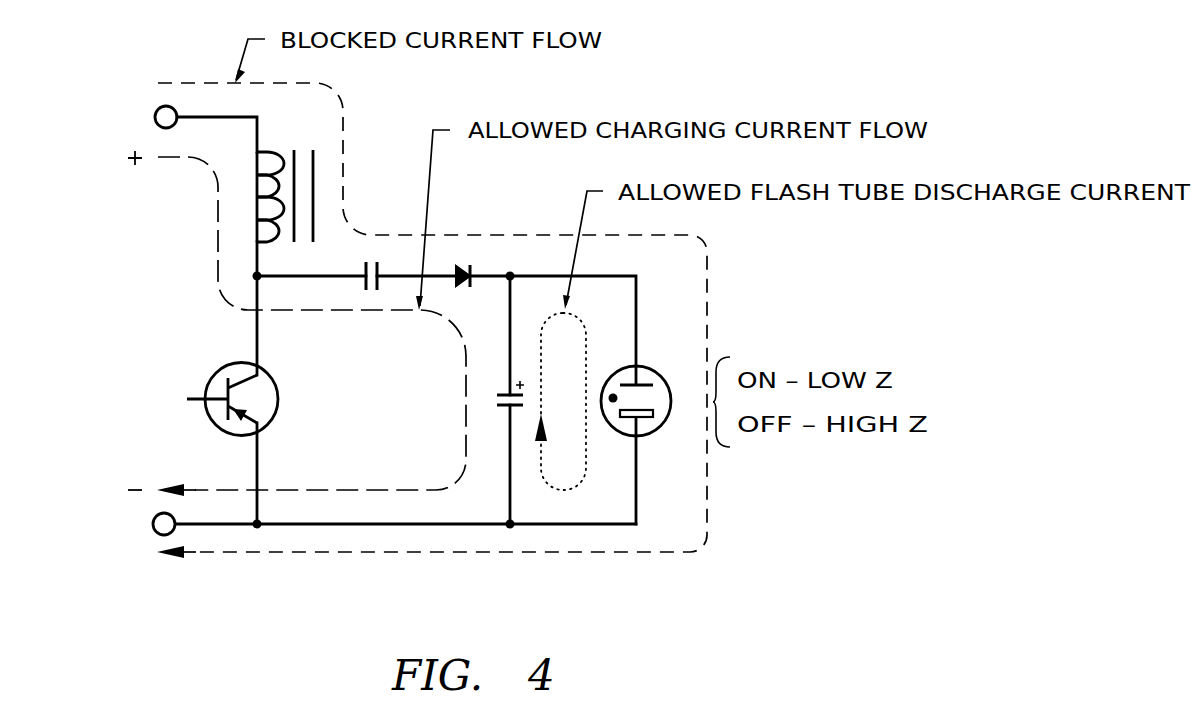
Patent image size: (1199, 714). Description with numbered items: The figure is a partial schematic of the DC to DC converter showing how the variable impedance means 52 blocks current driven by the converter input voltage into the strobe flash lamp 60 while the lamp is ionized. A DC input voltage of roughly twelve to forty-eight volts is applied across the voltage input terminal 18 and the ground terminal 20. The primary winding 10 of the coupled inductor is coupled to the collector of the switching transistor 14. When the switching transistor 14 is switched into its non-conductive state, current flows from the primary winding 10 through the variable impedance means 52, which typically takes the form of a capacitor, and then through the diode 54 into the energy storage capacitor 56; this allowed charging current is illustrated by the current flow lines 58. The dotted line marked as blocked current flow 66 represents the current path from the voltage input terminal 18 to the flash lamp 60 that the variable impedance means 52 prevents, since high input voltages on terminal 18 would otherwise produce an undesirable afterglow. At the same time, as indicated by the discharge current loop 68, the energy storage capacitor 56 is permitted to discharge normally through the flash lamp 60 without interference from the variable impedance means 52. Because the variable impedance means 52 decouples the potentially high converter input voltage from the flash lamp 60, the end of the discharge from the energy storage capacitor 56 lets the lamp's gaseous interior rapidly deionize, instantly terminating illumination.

The primary winding 10 is at (257, 193).
The switching transistor 14 is at (220, 368).
The voltage input terminal 18 is at (152, 112).
The ground terminal 20 is at (153, 527).
The variable impedance means 52 is at (366, 266).
The diode 54 is at (458, 268).
The energy storage capacitor 56 is at (505, 408).
The current flow lines 58 is at (466, 365).
The flash lamp 60 is at (661, 377).
The blocked current flow 66 is at (193, 82).
The allowed flash tube discharge current 68 is at (586, 328).